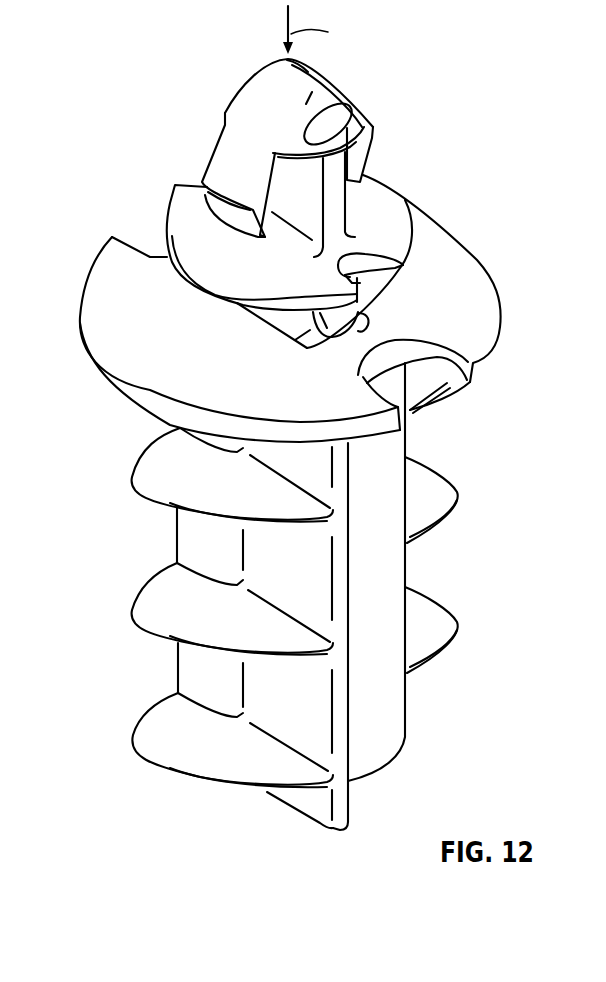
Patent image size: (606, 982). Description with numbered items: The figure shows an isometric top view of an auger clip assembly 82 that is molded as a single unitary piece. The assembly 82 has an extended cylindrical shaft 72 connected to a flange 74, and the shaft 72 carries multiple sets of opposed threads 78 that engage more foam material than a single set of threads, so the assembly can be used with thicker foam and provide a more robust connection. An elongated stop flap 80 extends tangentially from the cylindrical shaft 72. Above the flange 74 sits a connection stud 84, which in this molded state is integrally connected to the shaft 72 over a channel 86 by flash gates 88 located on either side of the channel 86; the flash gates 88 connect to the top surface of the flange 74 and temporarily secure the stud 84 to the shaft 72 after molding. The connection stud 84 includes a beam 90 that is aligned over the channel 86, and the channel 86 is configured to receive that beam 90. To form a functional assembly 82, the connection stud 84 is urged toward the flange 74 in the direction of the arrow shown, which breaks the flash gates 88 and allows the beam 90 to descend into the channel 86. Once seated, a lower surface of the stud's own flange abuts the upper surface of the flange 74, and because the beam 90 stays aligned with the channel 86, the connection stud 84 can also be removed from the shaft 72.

The auger clip assembly 82 is at (84, 186).
The connection stud 84 is at (340, 97).
The beam 90 is at (360, 300).
The flange 74 is at (470, 277).
The flash gates 88 is at (357, 336).
The channel 86 is at (303, 332).
The cylindrical shaft 72 is at (190, 543).
The stop flap 80 is at (337, 813).
The threads 78 is at (432, 398).